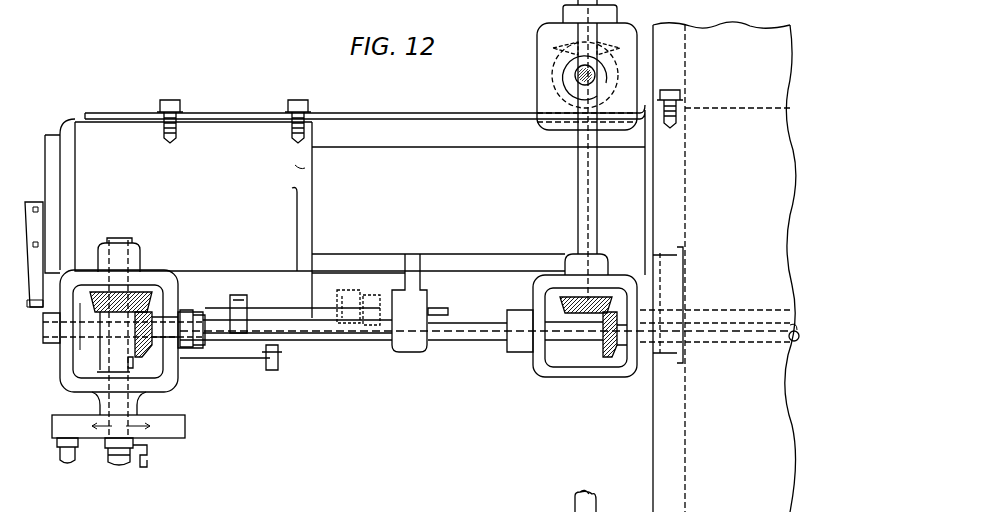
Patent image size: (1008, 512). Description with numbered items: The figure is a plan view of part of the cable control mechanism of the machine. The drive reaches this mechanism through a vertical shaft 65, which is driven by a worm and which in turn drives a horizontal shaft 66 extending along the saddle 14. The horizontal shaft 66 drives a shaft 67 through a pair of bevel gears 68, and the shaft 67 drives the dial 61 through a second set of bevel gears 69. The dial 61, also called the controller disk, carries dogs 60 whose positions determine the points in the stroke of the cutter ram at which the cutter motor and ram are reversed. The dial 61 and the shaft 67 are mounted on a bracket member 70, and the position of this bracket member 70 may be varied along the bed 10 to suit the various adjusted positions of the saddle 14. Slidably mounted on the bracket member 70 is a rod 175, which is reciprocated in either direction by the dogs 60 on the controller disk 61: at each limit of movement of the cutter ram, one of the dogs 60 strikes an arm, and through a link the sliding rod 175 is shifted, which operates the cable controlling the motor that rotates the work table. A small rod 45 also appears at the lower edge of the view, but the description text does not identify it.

The bed 10 is at (388, 160).
The saddle 14 is at (698, 415).
The rod 45 is at (574, 506).
The dogs 60 is at (53, 440).
The dial 61 is at (173, 423).
The vertical shaft 65 is at (577, 75).
The horizontal shaft 66 is at (578, 186).
The shaft 67 is at (368, 333).
The bevel gears 68 is at (560, 302).
The bevel gears 69 is at (147, 300).
The bracket member 70 is at (305, 168).
The rod 175 is at (440, 305).